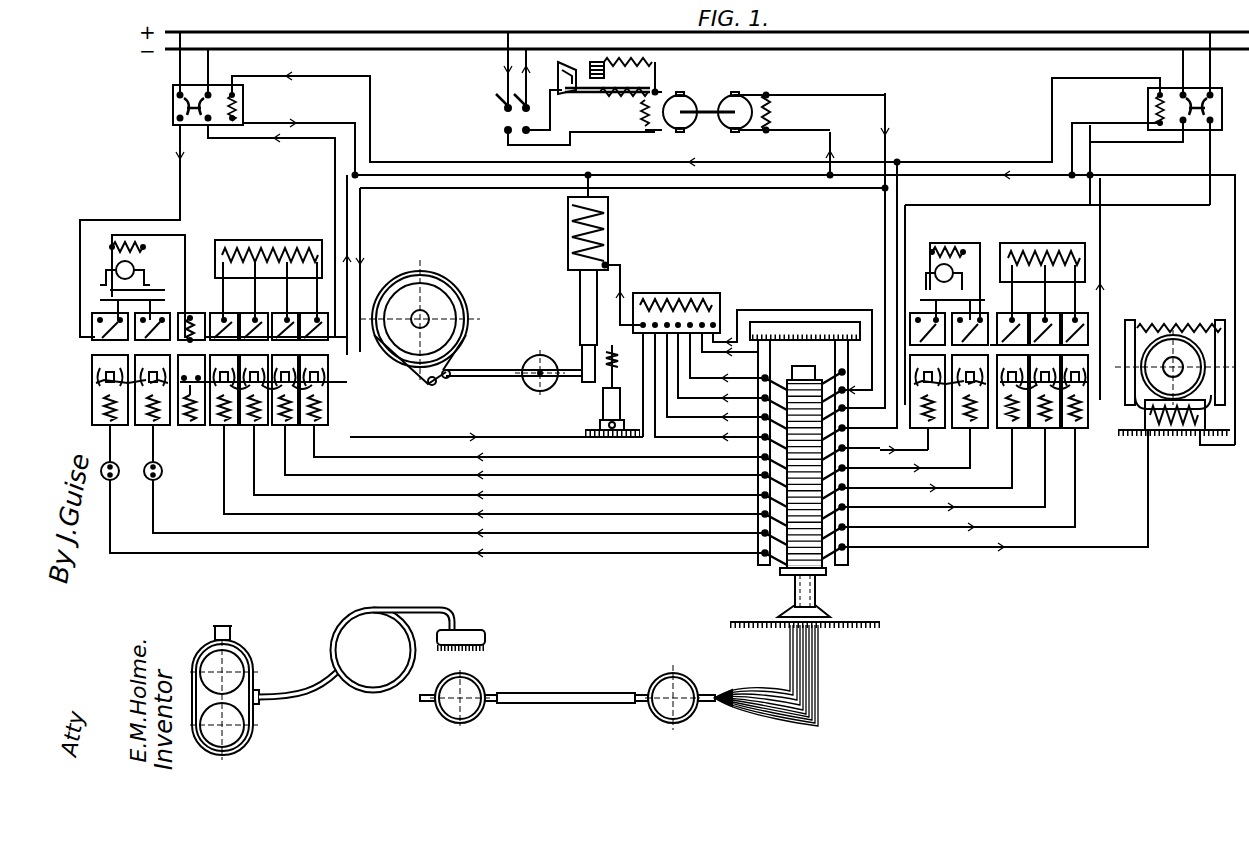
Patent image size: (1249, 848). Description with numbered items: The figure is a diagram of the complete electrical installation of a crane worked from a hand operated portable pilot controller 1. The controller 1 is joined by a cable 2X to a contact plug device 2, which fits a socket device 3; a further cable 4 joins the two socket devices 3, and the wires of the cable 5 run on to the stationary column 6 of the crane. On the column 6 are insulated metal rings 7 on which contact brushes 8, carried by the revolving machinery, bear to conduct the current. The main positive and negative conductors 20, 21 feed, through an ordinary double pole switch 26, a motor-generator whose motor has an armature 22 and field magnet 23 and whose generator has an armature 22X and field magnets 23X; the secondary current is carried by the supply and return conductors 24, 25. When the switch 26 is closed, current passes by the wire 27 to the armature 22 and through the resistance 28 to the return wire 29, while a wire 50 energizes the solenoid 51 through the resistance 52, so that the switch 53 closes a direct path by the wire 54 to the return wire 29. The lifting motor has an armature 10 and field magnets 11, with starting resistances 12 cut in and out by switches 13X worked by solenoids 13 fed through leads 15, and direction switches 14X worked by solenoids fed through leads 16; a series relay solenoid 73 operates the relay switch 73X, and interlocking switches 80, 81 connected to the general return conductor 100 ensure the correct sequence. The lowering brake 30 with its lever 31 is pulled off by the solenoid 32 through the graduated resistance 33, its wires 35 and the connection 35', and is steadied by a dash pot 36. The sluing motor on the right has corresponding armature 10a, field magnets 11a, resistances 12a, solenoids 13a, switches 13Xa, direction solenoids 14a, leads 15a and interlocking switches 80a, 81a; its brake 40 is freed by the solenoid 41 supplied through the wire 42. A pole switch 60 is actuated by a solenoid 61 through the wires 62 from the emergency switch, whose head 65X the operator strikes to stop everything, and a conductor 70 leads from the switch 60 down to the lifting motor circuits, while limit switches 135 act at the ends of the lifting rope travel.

The portable pilot controller 1 is at (220, 706).
The contact plug device 2 is at (480, 632).
The cable 2X is at (342, 620).
The socket devices 3 is at (676, 682).
The cable 4 is at (570, 696).
The cable wires 5 is at (814, 691).
The column 6 is at (824, 595).
The metal rings 7 is at (825, 574).
The contact brushes 8 is at (769, 568).
The armature 10 is at (133, 268).
The armature 10a is at (934, 274).
The field magnets 11 is at (110, 250).
The field magnets 11a is at (944, 248).
The resistances 12 is at (260, 244).
The resistances 12a is at (1034, 246).
The solenoids 13 is at (314, 428).
The resistance switches 13X is at (304, 330).
The solenoids 13a is at (1072, 430).
The resistance switches 13Xa is at (1040, 328).
The direction switches 14X is at (160, 318).
The direction solenoids 14a is at (965, 430).
The leads 15 is at (684, 514).
The leads 15a is at (1068, 494).
The leads 16 is at (668, 552).
The positive main conductor 20 is at (1064, 34).
The negative main conductor 21 is at (1134, 74).
The motor armature 22 is at (684, 102).
The generator armature 22X is at (728, 96).
The motor field magnet 23 is at (640, 116).
The generator field magnets 23X is at (770, 114).
The supply conductor 24 is at (848, 408).
The return conductor 25 is at (832, 140).
The double pole switch 26 is at (500, 102).
The wire 27 is at (596, 138).
The resistance 28 is at (624, 82).
The return wire 29 is at (670, 88).
The lowering brake 30 is at (420, 322).
The brake operating lever 31 is at (498, 370).
The brake solenoid 32 is at (604, 232).
The graduated resistance 33 is at (671, 296).
The wires 35 is at (805, 314).
The conductor 35' is at (698, 407).
The dash pot 36 is at (600, 408).
The sluing brake 40 is at (1175, 364).
The solenoid 41 is at (1170, 432).
The wire 42 is at (932, 558).
The wire 50 is at (655, 78).
The solenoid 51 is at (598, 62).
The resistance 52 is at (632, 62).
The switch 53 is at (602, 94).
The wire 54 is at (558, 90).
The pole switch 60 is at (172, 108).
The solenoid 61 is at (236, 104).
The wires 62 is at (882, 438).
The emergency switch head 65X is at (230, 616).
The conductor 70 is at (178, 176).
The series relay solenoid 73 is at (189, 322).
The series relay switch 73X is at (186, 424).
The interlocking switches 80 is at (320, 382).
The interlocking switches 80a is at (1018, 380).
The interlocking switches 81 is at (98, 378).
The interlocking switches 81a is at (912, 382).
The general return conductor 100 is at (1232, 268).
The limit switches 135 is at (118, 478).